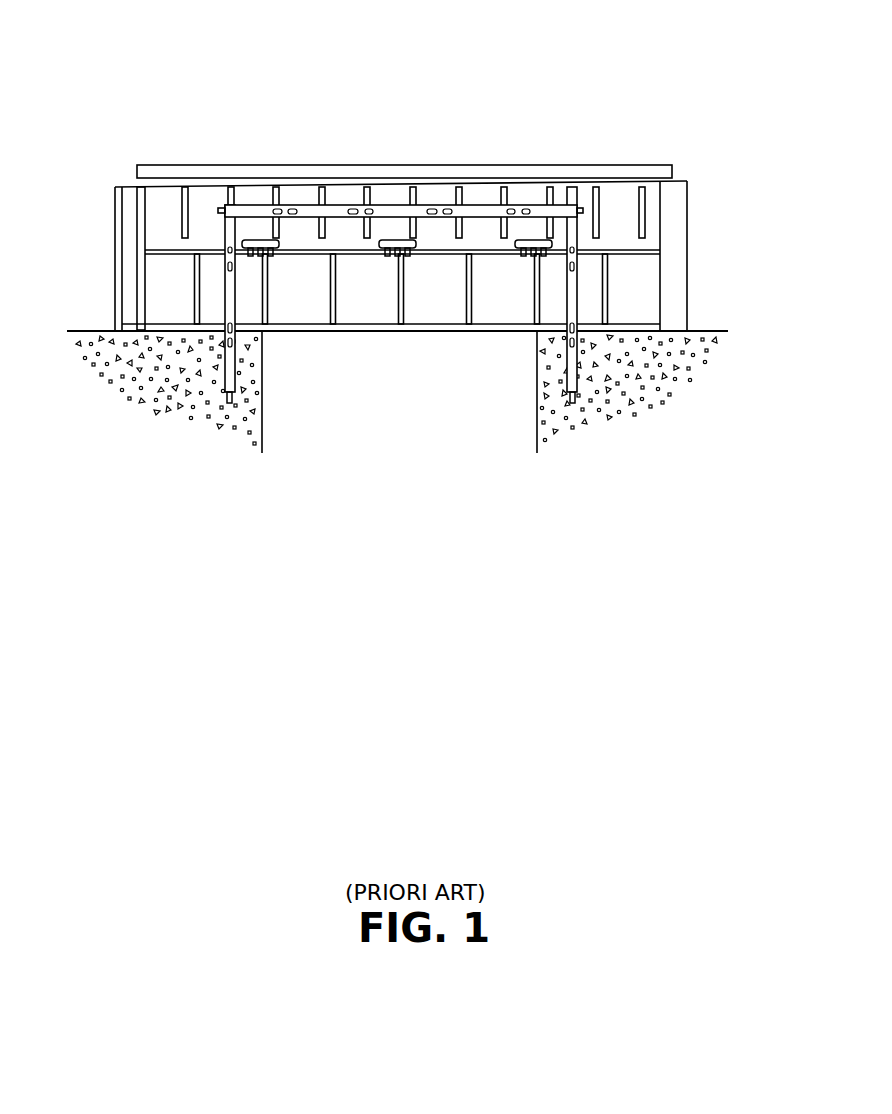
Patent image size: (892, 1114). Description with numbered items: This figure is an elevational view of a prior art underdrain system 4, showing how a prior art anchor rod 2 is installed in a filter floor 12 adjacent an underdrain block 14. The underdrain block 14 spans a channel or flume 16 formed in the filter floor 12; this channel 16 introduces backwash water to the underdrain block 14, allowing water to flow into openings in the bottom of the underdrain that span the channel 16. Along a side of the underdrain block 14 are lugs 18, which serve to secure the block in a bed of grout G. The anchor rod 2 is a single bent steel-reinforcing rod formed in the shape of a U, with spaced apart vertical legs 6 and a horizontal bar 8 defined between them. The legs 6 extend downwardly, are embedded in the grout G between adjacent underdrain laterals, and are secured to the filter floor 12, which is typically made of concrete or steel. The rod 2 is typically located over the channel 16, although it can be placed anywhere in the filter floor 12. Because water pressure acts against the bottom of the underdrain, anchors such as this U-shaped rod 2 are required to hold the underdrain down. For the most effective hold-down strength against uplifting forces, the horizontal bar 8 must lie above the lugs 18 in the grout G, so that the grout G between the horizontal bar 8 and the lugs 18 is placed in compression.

The underdrain system 4 is at (136, 53).
The anchor rod 2 is at (577, 248).
The vertical legs 6 is at (578, 342).
The horizontal bar 8 is at (291, 205).
The filter floor 12 is at (710, 330).
The underdrain block 14 is at (158, 222).
The channel or flume 16 is at (421, 413).
The lugs 18 is at (377, 245).
The grout G is at (204, 381).